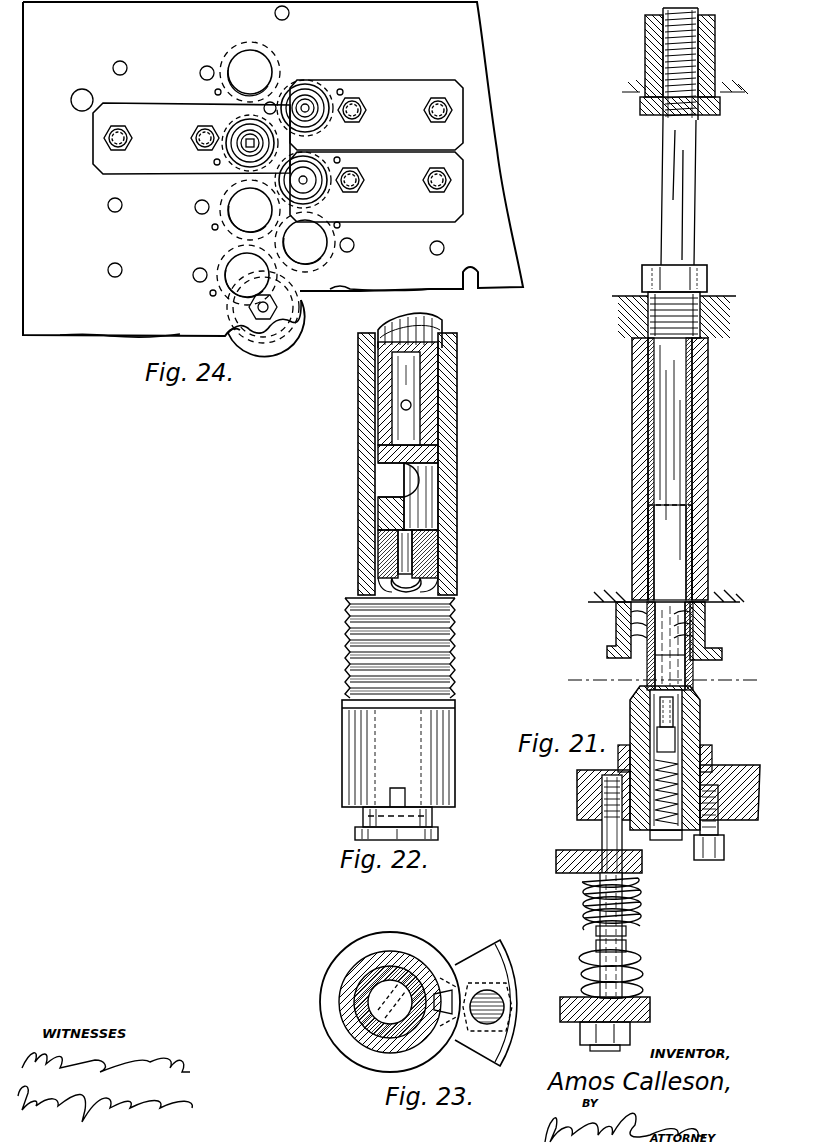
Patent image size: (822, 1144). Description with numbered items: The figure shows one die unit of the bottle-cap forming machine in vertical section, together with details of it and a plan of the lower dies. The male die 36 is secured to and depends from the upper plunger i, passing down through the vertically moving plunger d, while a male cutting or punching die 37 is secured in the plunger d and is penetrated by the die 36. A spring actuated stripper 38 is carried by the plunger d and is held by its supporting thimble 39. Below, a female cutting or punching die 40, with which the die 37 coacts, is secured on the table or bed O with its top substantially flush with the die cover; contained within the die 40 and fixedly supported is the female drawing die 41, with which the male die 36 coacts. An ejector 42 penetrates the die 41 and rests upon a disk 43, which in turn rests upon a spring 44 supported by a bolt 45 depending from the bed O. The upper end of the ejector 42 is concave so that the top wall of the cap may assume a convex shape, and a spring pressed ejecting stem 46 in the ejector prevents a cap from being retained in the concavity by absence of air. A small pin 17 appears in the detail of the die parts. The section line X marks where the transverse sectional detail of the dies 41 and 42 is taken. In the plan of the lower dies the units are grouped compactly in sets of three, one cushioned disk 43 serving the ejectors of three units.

In FIG. 24, the table or bed O is at (497, 176).
In FIG. 21, the table or bed O is at (742, 775).
In FIG. 21, the plunger i is at (730, 95).
In FIG. 21, the vertically moving plunger d is at (702, 440).
In FIG. 22, the pin 17 is at (378, 518).
In FIG. 22, the male die 36 is at (430, 458).
In FIG. 21, the male die 36 is at (680, 533).
In FIG. 22, the male cutting or punching die 37 is at (450, 481).
In FIG. 21, the male cutting or punching die 37 is at (697, 577).
In FIG. 21, the spring actuated stripper 38 is at (693, 672).
In FIG. 21, the supporting thimble 39 is at (722, 645).
In FIG. 24, the female cutting or punching die 40 is at (238, 134).
In FIG. 21, the female cutting or punching die 40 is at (700, 722).
In FIG. 24, the female drawing die 41 is at (238, 156).
In FIG. 22, the female drawing die 41 is at (442, 556).
In FIG. 21, the female drawing die 41 is at (630, 712).
In FIG. 23, the female drawing die 41 is at (430, 968).
In FIG. 24, the ejector 42 is at (318, 118).
In FIG. 22, the ejector 42 is at (376, 549).
In FIG. 21, the ejector 42 is at (702, 755).
In FIG. 23, the ejector 42 is at (370, 1042).
In FIG. 24, the disk 43 is at (300, 318).
In FIG. 21, the disk 43 is at (642, 866).
In FIG. 21, the spring 44 is at (638, 920).
In FIG. 21, the bolt 45 is at (638, 975).
In FIG. 24, the spring pressed ejecting stem 46 is at (308, 112).
In FIG. 22, the spring pressed ejecting stem 46 is at (430, 540).
In FIG. 21, the spring pressed ejecting stem 46 is at (673, 706).
In FIG. 21, the section line X is at (662, 670).